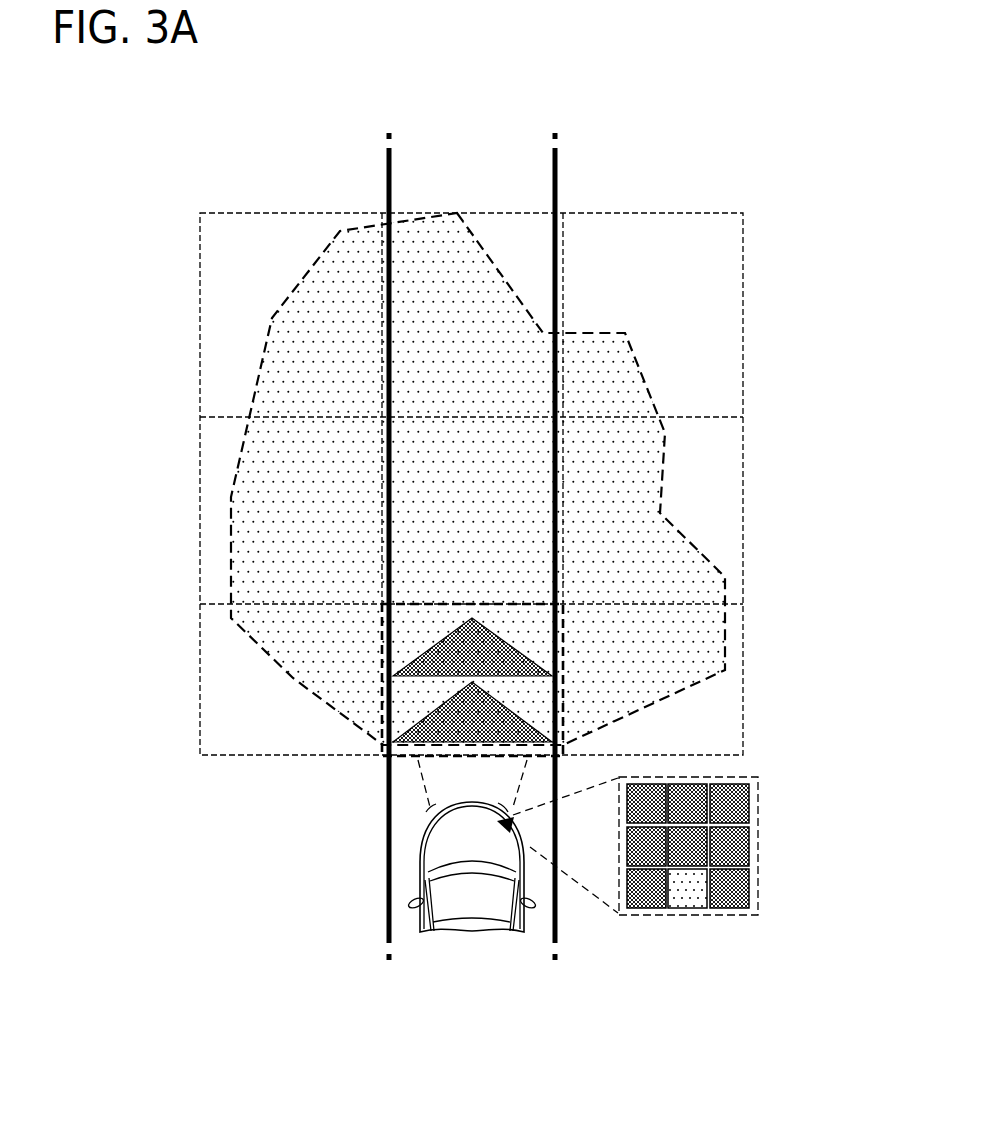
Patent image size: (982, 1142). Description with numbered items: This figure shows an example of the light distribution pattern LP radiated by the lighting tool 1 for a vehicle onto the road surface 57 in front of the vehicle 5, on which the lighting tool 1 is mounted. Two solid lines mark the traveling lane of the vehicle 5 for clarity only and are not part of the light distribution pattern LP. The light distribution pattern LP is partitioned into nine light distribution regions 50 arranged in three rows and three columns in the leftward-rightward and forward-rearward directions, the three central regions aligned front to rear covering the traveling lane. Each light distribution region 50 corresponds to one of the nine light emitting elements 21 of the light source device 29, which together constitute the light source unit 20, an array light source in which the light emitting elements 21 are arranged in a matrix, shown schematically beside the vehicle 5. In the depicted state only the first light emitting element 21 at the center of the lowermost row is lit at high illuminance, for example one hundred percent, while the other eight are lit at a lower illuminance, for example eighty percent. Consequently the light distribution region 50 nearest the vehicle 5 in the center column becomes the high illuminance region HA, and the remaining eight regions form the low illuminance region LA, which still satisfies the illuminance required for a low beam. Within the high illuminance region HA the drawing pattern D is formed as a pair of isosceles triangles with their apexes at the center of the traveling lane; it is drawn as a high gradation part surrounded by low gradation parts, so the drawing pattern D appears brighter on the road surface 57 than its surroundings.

The lighting tool for a vehicle 1 is at (502, 803).
The vehicle 5 is at (412, 847).
The light source unit 20 is at (683, 859).
The light emitting elements 21 is at (627, 847).
The light source device 29 is at (762, 792).
The light distribution regions 50 is at (200, 332).
The road surface 57 is at (527, 192).
The light distribution pattern LP is at (301, 266).
The high illuminance region HA is at (382, 667).
The low illuminance region LA is at (310, 620).
The drawing pattern D is at (436, 632).